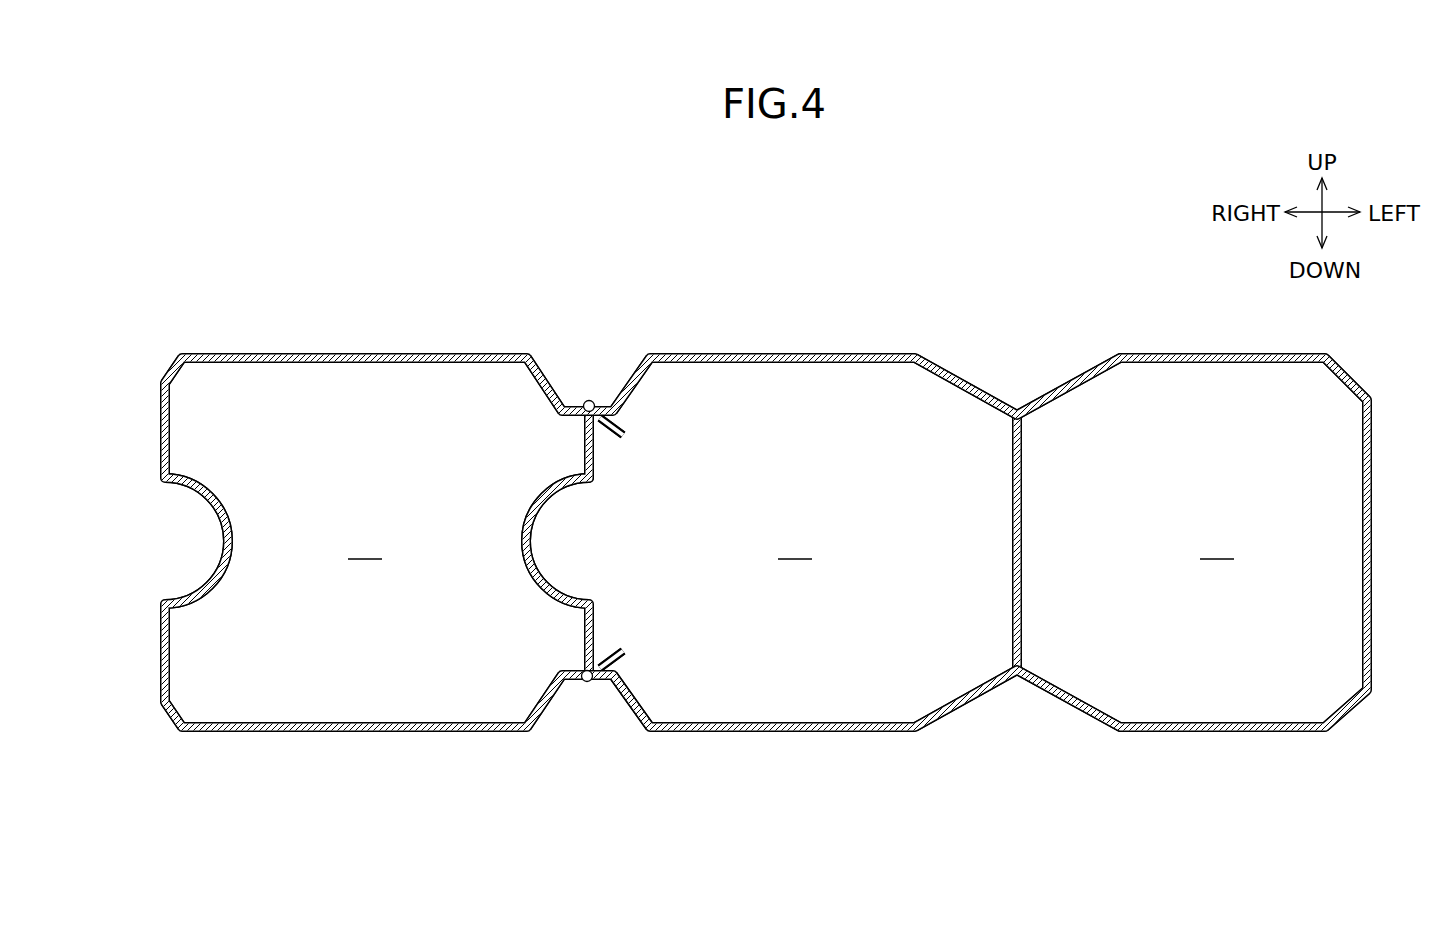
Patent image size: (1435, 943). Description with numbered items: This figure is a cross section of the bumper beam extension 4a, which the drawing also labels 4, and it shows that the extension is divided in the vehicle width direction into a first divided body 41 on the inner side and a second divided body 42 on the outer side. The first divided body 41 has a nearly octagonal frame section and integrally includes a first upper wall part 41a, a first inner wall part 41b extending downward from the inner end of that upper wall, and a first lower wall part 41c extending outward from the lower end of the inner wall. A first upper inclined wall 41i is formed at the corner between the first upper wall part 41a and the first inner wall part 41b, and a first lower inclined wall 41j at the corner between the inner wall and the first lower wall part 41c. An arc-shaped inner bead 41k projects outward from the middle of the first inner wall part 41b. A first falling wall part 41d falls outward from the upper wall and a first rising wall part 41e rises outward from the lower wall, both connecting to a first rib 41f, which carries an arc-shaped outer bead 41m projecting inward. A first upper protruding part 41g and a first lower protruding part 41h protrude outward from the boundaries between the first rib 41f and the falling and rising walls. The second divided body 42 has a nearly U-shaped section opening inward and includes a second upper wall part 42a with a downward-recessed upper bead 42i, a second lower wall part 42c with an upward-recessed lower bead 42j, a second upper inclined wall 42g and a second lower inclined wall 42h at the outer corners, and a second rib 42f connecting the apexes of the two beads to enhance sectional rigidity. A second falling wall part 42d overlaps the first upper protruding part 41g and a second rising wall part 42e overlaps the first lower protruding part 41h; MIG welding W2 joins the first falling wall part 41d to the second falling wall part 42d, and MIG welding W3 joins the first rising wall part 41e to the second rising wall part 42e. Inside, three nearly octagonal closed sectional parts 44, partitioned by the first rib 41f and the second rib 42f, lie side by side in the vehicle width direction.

The battery case / frame assembly 4 is at (758, 493).
The bumper beam extension 4a is at (758, 493).
The first divided body 41 is at (370, 530).
The first upper wall part 41a is at (350, 353).
The first inner wall part 41b is at (160, 435).
The first lower wall part 41c is at (347, 732).
The first falling wall part 41d is at (550, 373).
The first rising wall part 41e is at (548, 712).
The first rib 41f is at (584, 640).
The first upper protruding part 41g is at (612, 432).
The first lower protruding part 41h is at (618, 662).
The first upper inclined wall 41i is at (172, 365).
The first lower inclined wall 41j is at (170, 715).
The inner bead 41k is at (226, 540).
The outer bead 41m is at (532, 548).
The second divided body 42 is at (1023, 530).
The second upper wall part 42a is at (845, 353).
The second lower wall part 42c is at (826, 732).
The second falling wall part 42d is at (628, 374).
The second rising wall part 42e is at (626, 714).
The second rib 42f is at (1023, 553).
The second upper inclined wall 42g is at (1352, 378).
The second lower inclined wall 42h is at (1352, 712).
The upper bead 42i is at (956, 383).
The lower bead 42j is at (960, 712).
The closed sectional parts 44 is at (791, 544).
The MIG welding W2 is at (589, 400).
The MIG welding W3 is at (587, 682).